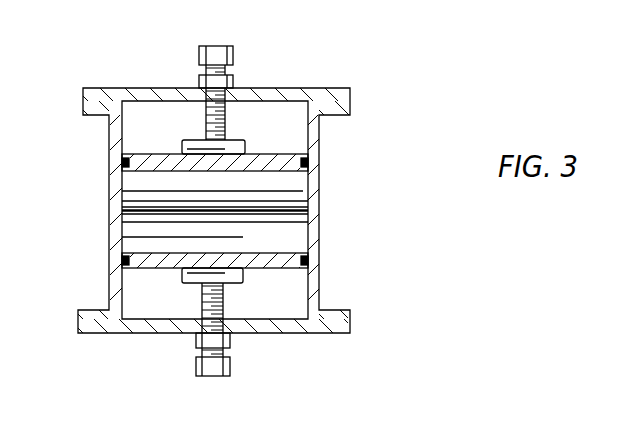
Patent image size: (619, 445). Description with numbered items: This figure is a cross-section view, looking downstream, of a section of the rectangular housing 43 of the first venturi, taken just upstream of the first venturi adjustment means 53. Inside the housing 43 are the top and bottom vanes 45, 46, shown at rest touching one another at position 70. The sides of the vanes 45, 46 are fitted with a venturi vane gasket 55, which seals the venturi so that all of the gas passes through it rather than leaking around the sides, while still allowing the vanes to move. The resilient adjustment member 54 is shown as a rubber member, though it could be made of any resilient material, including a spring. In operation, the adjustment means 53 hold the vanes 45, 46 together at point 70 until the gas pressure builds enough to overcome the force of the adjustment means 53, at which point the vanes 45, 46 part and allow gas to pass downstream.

The rectangular housing 43 is at (117, 88).
The first venturi top vane 45 is at (260, 188).
The first venturi bottom vane 46 is at (258, 238).
The first venturi adjustment means 53 is at (228, 52).
The resilient adjustment member 54 is at (238, 146).
The venturi vane gasket 55 is at (121, 161).
The vane rest position 70 is at (121, 212).